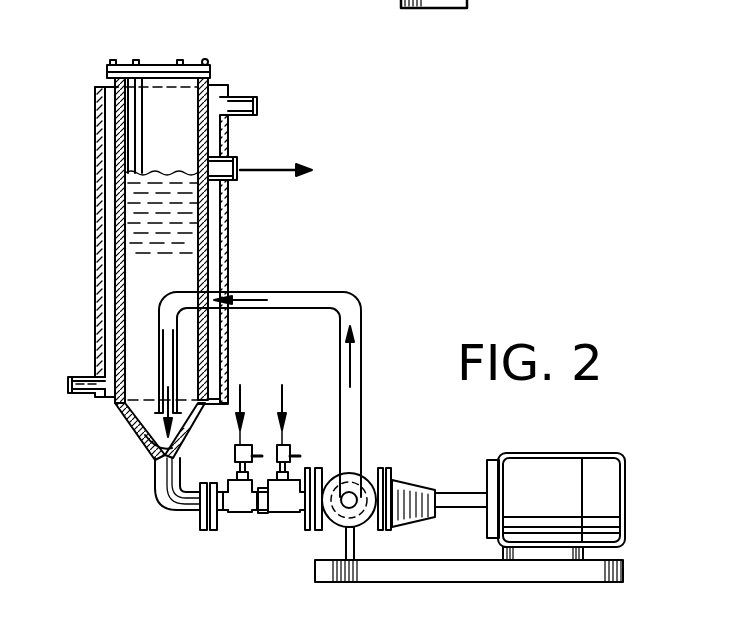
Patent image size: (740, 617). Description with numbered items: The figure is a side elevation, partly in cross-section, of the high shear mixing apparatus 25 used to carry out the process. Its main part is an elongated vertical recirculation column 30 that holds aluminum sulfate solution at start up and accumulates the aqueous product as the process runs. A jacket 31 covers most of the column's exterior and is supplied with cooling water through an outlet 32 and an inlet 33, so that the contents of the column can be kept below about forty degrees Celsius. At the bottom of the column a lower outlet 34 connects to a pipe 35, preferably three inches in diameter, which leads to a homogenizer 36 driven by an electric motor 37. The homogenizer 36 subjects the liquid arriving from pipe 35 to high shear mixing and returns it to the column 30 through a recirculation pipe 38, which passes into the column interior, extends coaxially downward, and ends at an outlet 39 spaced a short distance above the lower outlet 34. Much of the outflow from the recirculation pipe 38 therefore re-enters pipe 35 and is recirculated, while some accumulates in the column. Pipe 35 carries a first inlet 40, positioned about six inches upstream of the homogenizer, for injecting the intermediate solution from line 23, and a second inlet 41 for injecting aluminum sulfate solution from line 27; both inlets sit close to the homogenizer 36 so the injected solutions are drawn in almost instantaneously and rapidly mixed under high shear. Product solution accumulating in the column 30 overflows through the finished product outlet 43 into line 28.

The line 23 is at (305, 375).
The high shear mixing apparatus 25 is at (335, 262).
The line 27 is at (240, 385).
The line 28 is at (264, 168).
The recirculation column 30 is at (237, 130).
The jacket 31 is at (230, 268).
The outlet 32 is at (247, 97).
The inlet 33 is at (90, 378).
The lower outlet 34 is at (160, 485).
The pipe 35 is at (185, 512).
The homogenizer 36 is at (380, 468).
The electric motor 37 is at (603, 507).
The recirculation pipe 38 is at (360, 362).
The outlet 39 is at (150, 448).
The first inlet 40 is at (292, 455).
The second inlet 41 is at (265, 447).
The finished product outlet 43 is at (237, 178).